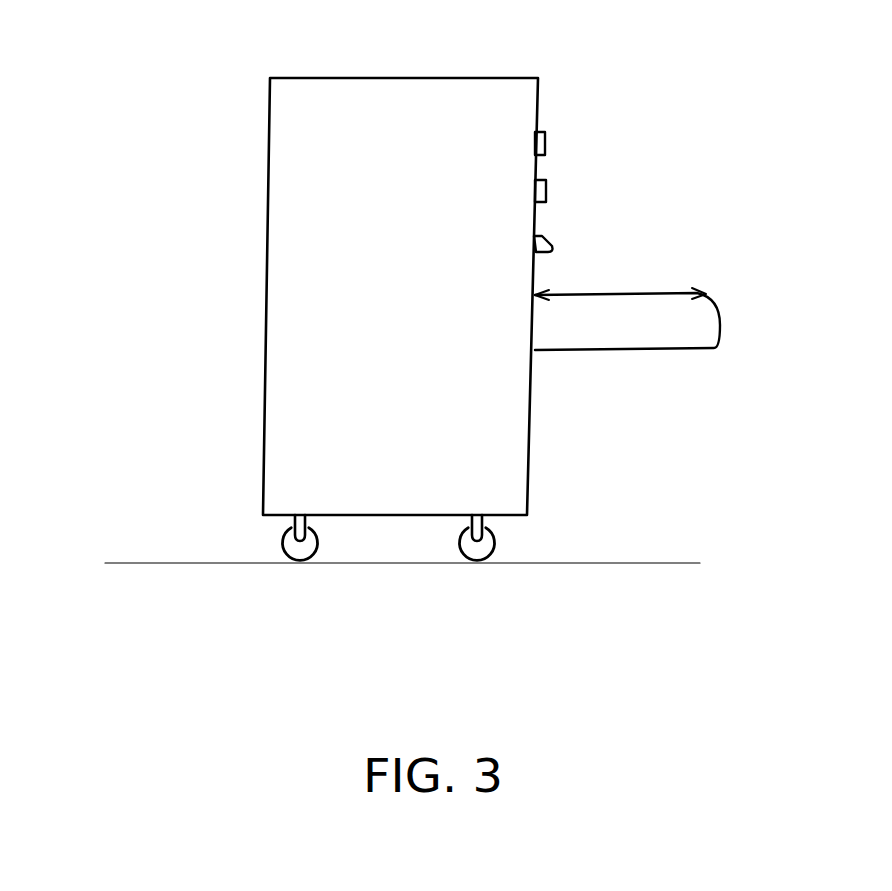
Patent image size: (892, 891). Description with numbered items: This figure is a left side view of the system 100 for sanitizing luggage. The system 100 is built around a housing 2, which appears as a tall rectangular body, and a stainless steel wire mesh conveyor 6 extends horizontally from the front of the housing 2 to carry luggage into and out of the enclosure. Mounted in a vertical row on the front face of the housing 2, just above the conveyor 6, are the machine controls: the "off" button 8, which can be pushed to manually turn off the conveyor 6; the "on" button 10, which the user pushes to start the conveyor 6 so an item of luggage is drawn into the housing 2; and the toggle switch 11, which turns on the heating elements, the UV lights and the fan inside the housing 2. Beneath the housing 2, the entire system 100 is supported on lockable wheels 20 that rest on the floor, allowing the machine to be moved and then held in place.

The system 100 is at (175, 53).
The housing 2 is at (450, 72).
The "off" button 8 is at (547, 142).
The "on" button 10 is at (553, 193).
The toggle switch 11 is at (557, 243).
The conveyor 6 is at (607, 293).
The lockable wheels 20 is at (465, 565).